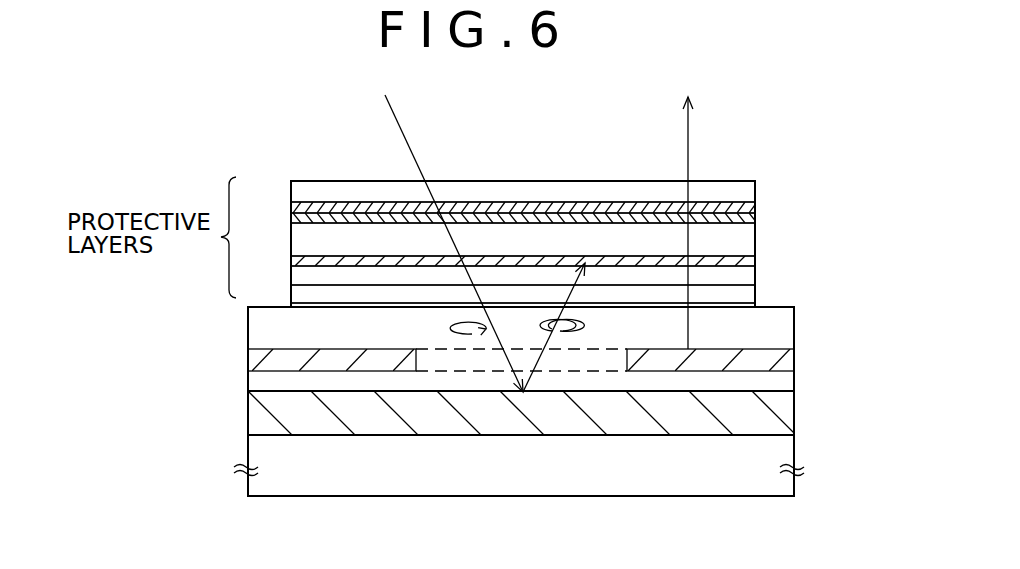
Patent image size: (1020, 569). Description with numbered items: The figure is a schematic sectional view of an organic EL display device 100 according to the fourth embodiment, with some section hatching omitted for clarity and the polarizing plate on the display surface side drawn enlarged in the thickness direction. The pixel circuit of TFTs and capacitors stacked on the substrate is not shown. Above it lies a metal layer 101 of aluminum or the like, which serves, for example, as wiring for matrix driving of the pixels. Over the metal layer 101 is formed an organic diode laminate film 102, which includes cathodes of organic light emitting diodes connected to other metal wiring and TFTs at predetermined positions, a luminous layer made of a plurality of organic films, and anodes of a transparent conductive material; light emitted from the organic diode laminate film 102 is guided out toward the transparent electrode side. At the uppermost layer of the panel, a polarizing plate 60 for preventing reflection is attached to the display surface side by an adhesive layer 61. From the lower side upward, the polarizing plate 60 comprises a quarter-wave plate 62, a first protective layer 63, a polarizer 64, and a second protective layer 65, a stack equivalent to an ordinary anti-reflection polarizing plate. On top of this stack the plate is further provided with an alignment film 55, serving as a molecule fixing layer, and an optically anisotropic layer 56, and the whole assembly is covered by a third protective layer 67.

The organic EL display device 100 is at (292, 110).
The metal layer 101 is at (793, 412).
The organic diode laminate film 102 is at (793, 360).
The polarizing plate 60 is at (757, 168).
The adhesive layer 61 is at (750, 305).
The quarter-wave plate 62 is at (749, 293).
The first protective layer 63 is at (291, 279).
The polarizer 64 is at (750, 262).
The second protective layer 65 is at (291, 240).
The third protective layer 67 is at (291, 193).
The alignment film 55 is at (752, 218).
The optically anisotropic layer 56 is at (750, 207).